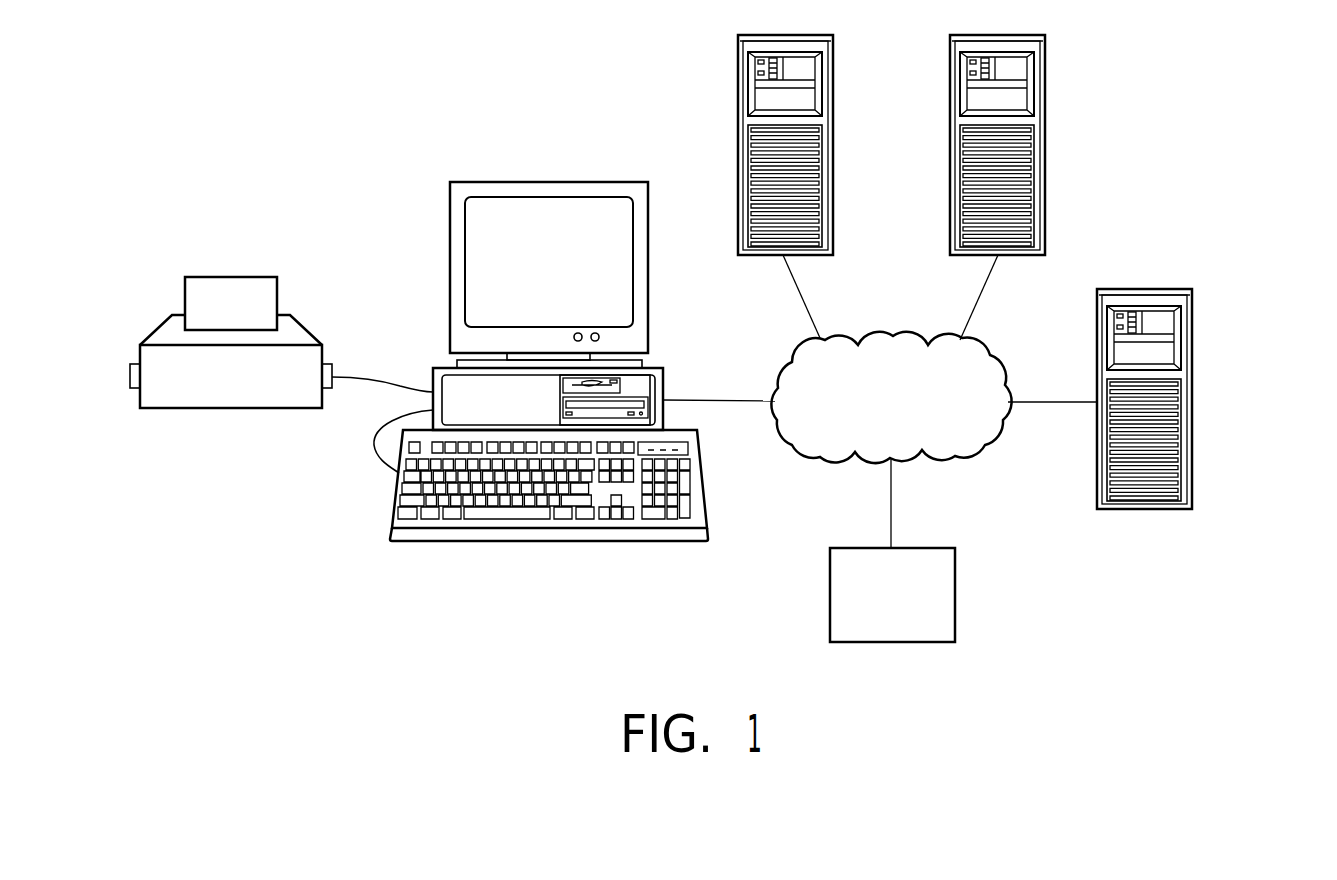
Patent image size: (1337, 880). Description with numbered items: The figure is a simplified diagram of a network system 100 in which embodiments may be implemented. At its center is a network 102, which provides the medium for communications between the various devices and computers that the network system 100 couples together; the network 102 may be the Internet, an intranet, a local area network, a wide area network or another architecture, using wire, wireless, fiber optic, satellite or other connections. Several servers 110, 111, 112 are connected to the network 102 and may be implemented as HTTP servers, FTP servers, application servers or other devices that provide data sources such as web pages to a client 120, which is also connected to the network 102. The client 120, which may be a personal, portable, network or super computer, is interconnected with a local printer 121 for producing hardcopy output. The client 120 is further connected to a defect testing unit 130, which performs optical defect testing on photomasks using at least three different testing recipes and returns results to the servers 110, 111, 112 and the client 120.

The network system 100 is at (190, 126).
The network 102 is at (958, 457).
The server 110 is at (737, 96).
The server 111 is at (1046, 96).
The server 112 is at (1193, 400).
The client 120 is at (548, 182).
The local printer 121 is at (230, 410).
The defect testing unit 130 is at (955, 594).